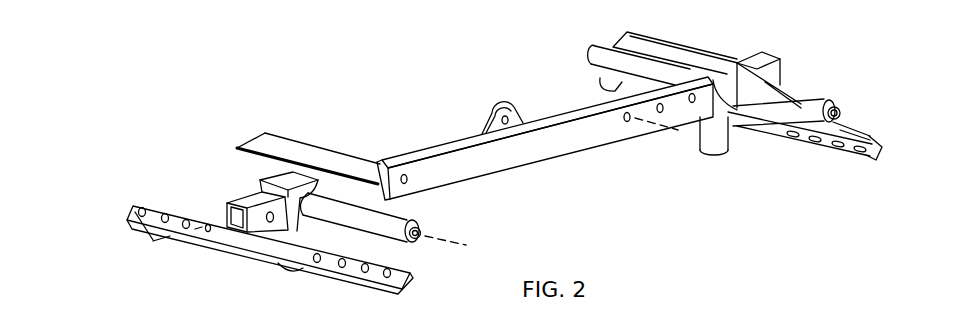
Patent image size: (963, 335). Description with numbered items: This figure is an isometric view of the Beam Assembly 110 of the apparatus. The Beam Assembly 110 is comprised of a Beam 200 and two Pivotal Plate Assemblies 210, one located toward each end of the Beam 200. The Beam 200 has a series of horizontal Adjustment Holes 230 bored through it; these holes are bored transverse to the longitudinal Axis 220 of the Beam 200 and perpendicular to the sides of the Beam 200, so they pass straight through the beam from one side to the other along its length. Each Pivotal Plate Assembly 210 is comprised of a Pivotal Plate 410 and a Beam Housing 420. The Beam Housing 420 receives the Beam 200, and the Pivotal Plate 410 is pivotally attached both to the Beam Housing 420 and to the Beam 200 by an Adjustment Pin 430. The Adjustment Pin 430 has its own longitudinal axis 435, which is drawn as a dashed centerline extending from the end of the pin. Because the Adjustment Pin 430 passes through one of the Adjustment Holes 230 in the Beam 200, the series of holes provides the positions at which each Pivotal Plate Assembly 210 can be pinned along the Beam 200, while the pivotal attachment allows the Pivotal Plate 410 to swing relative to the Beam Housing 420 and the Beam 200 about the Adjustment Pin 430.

The Beam Assembly 110 is at (557, 113).
The Beam 200 is at (442, 142).
The Pivotal Plate Assembly 210 is at (283, 179).
The longitudinal Axis 220 is at (138, 208).
The Adjustment Holes 230 is at (623, 120).
The Pivotal Plate 410 is at (285, 145).
The Beam Housing 420 is at (281, 170).
The Adjustment Pin 430 is at (421, 227).
The longitudinal axis 435 is at (450, 242).